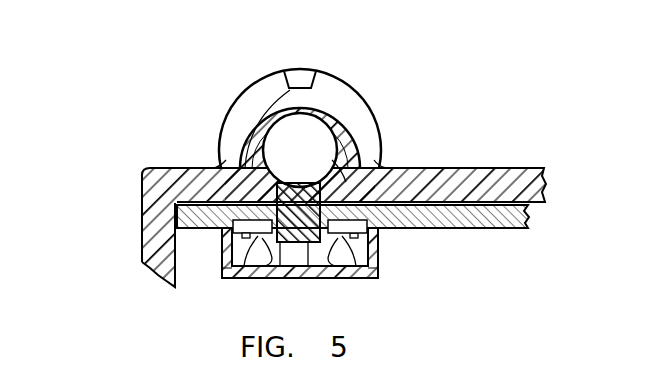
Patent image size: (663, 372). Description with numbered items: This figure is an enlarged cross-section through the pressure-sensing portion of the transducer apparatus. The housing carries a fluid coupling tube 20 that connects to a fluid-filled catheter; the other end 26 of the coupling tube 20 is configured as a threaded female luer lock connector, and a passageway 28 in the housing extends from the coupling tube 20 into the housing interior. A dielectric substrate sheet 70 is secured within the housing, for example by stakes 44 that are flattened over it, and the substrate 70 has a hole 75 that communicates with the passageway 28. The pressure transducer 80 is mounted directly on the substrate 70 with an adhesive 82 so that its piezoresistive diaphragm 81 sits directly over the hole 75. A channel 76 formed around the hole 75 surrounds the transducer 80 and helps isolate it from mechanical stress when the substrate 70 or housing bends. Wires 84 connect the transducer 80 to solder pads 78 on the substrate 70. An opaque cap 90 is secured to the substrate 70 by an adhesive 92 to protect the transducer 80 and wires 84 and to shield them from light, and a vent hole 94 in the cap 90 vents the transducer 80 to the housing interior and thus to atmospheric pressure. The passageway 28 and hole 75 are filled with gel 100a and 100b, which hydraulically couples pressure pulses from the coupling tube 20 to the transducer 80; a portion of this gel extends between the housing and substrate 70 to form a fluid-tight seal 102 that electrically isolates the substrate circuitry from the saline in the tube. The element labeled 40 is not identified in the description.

The fluid coupling tube 20 is at (267, 117).
The other end of coupling tube 26 is at (275, 82).
The passageway 28 is at (268, 200).
The support block 40 is at (142, 200).
The stakes 44 is at (215, 236).
The dielectric substrate sheet 70 is at (512, 228).
The hole 75 is at (440, 170).
The channel 76 is at (272, 184).
The solder pads 78 is at (228, 268).
The pressure transducer 80 is at (280, 268).
The piezoresistive diaphragm 81 is at (306, 268).
The adhesive 82 is at (262, 268).
The wires 84 is at (240, 280).
The cap 90 is at (380, 280).
The adhesive 92 is at (238, 240).
The vent hole 94 is at (378, 260).
The gel 100a is at (369, 118).
The gel portion 100b is at (366, 136).
The fluid-tight seal 102 is at (213, 168).